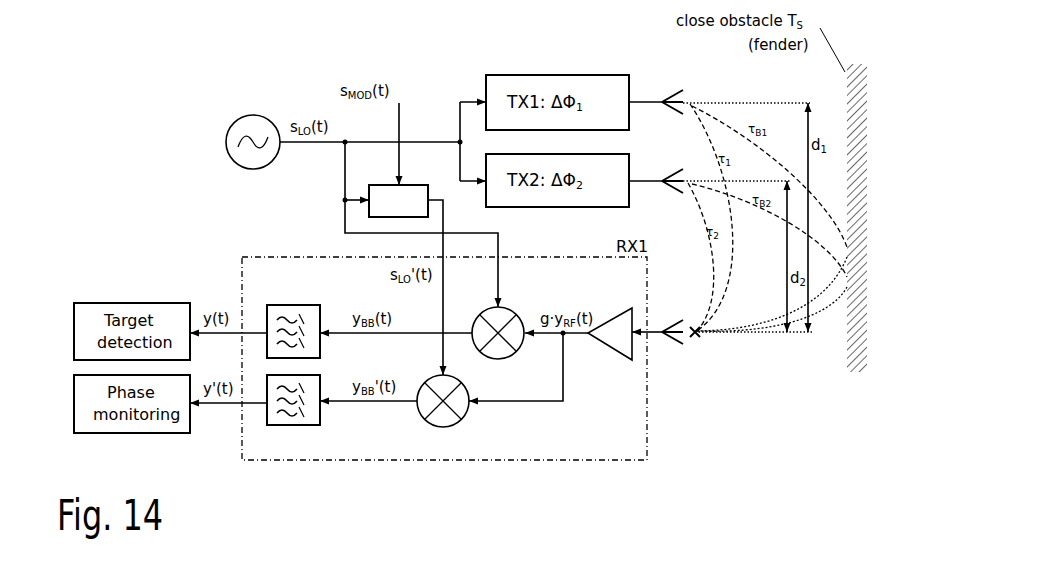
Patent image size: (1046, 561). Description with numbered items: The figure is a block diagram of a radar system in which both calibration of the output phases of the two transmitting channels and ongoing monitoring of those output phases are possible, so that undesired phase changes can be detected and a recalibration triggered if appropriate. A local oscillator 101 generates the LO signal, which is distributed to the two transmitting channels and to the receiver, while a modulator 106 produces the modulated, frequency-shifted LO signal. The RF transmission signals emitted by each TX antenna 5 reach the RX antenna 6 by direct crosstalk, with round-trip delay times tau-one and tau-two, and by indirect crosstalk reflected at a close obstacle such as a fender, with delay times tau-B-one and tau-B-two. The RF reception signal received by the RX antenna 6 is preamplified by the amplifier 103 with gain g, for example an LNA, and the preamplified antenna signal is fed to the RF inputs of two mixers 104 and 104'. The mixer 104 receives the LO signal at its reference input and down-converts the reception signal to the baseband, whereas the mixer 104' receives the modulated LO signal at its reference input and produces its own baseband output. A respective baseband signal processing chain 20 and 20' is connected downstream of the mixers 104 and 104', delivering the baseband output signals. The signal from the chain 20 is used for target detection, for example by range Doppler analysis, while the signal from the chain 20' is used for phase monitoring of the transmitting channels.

The local oscillator 101 is at (265, 117).
The modulator 106 is at (430, 185).
The TX antenna 5 is at (672, 96).
The RX antenna 6 is at (672, 320).
The amplifier 103 is at (606, 310).
The mixer 104 is at (511, 315).
The mixer 104' is at (471, 408).
The baseband signal processing chain 20 is at (293, 315).
The baseband signal processing chain 20' is at (306, 415).